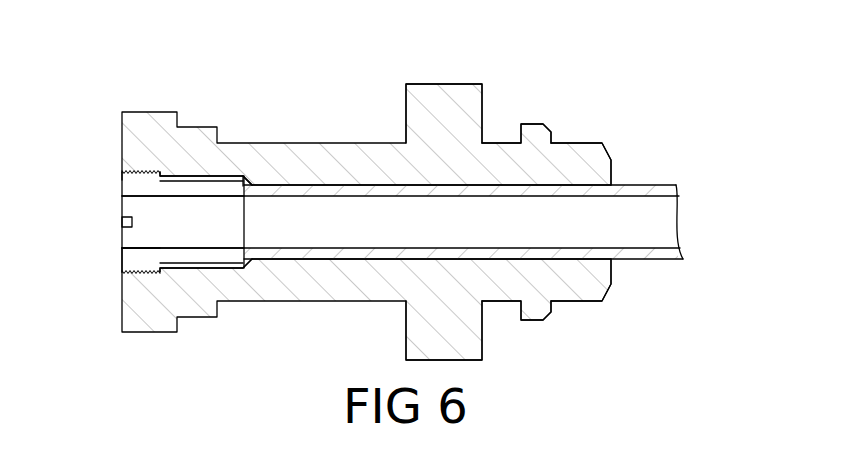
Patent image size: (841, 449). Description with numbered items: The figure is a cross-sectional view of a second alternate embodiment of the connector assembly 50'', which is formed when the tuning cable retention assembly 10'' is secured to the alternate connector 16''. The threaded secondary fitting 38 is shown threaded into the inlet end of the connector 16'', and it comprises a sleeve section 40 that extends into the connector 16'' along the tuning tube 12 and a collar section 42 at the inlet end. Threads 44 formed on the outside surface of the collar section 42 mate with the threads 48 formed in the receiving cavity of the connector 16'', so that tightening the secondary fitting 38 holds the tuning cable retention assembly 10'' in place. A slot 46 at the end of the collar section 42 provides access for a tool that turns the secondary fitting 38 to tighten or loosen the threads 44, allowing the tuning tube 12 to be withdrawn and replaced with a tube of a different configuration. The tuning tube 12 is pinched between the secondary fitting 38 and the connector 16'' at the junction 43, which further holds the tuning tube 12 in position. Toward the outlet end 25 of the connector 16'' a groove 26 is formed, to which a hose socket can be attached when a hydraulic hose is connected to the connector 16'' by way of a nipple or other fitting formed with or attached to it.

The tuning cable retention assembly 10'' is at (366, 225).
The tuning tube 12 is at (660, 185).
The connector 16'' is at (407, 222).
The outlet end 25 is at (612, 160).
The groove 26 is at (498, 127).
The threaded secondary fitting 38 is at (175, 195).
The sleeve section 40 is at (207, 255).
The collar section 42 is at (127, 262).
The junction 43 is at (245, 173).
The threads 44 is at (125, 173).
The slot 46 is at (120, 222).
The threads 48 is at (147, 172).
The connector assembly 50'' is at (378, 184).